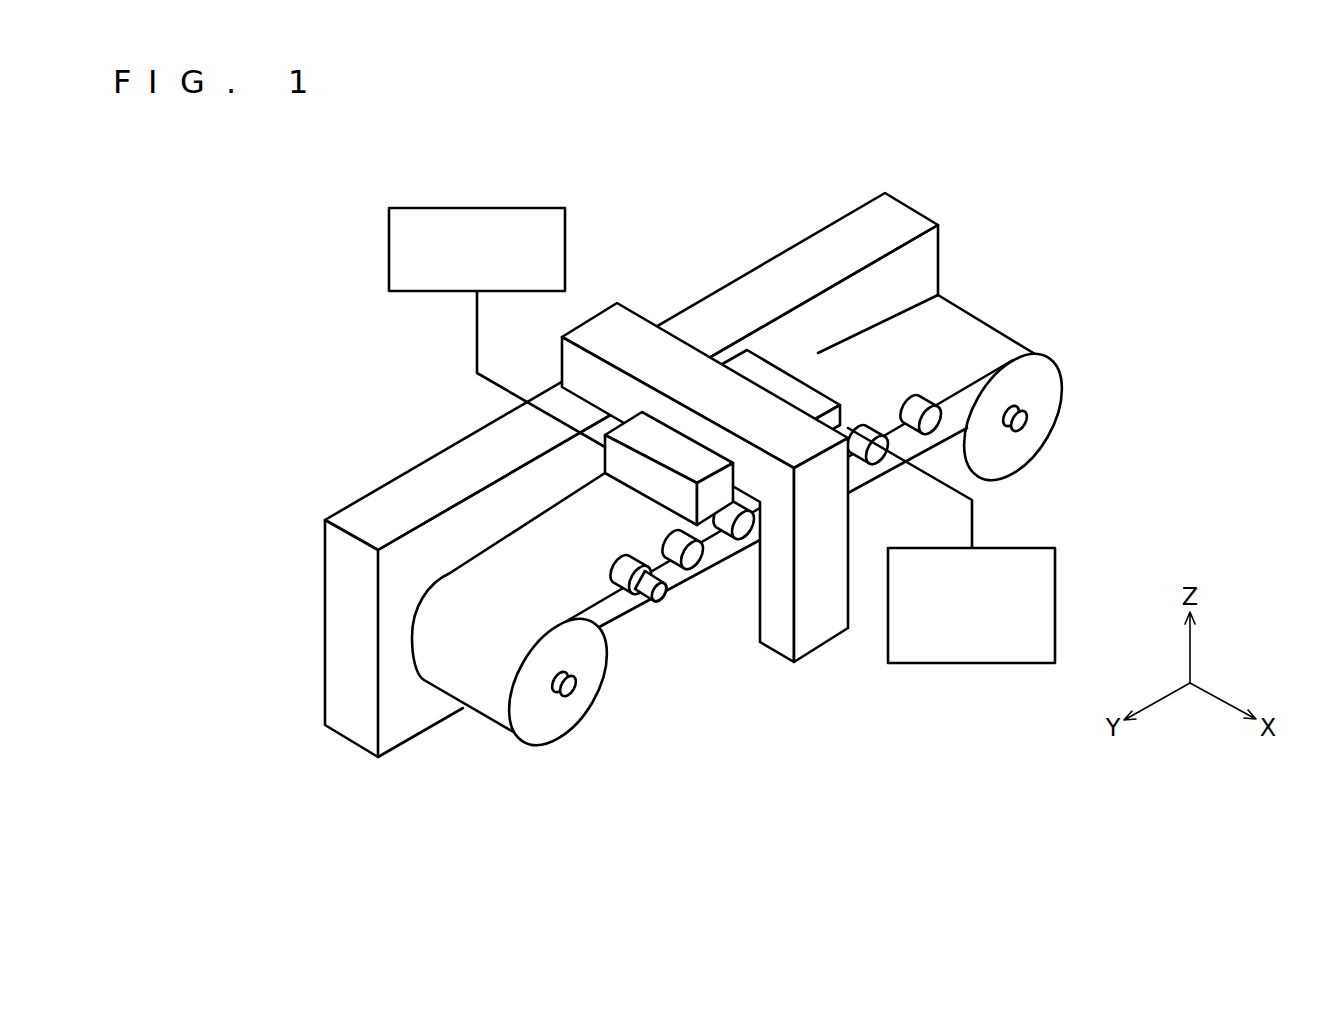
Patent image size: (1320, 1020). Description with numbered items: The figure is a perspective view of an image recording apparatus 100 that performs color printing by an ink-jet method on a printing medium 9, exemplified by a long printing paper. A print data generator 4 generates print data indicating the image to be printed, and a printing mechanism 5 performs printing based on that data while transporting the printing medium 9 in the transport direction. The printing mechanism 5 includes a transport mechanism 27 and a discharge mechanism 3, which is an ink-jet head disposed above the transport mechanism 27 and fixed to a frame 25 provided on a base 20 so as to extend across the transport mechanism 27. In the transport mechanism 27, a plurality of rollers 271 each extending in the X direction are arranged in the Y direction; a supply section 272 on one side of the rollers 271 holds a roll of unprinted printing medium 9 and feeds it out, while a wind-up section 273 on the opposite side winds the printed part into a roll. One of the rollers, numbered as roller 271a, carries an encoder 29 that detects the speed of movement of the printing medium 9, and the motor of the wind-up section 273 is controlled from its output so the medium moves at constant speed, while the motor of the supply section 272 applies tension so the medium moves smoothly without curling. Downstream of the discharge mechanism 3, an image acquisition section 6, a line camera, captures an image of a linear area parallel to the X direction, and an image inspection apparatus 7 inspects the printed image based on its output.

The image recording apparatus 100 is at (322, 279).
The print data generator 4 is at (478, 208).
The base 20 is at (838, 240).
The frame 25 is at (612, 325).
The image acquisition section 6 is at (809, 400).
The discharge mechanism 3 is at (673, 448).
The printing medium 9 is at (528, 558).
The printing mechanism 5 is at (790, 552).
The transport mechanism 27 is at (681, 727).
The rollers 271 is at (695, 558).
The roller 271a is at (629, 606).
The encoder 29 is at (644, 629).
The supply section 272 is at (578, 694).
The wind-up section 273 is at (1031, 427).
The image inspection apparatus 7 is at (972, 664).